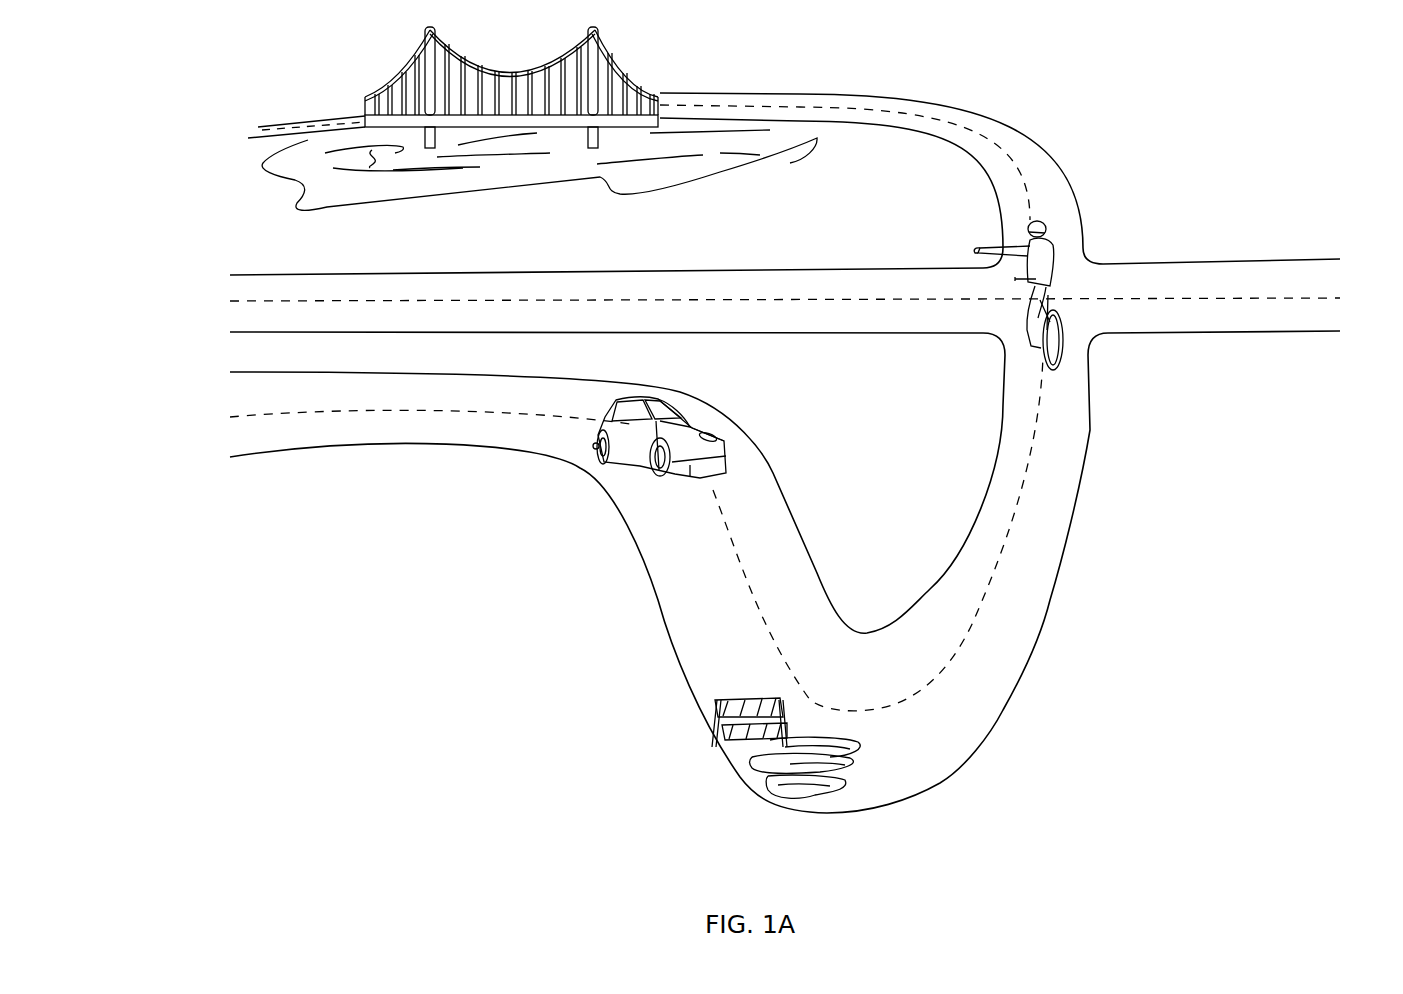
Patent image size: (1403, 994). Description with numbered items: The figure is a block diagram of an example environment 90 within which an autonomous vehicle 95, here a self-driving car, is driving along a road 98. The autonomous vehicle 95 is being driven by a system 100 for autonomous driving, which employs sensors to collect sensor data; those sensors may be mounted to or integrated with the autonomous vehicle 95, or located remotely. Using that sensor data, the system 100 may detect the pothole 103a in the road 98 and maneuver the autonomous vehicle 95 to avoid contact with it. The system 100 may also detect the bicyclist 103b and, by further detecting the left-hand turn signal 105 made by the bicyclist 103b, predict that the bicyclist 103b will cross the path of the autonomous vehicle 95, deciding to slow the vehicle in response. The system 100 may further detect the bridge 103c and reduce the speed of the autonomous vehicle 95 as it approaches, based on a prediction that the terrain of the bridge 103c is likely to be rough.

The environment 90 is at (1213, 75).
The autonomous vehicle 95 is at (697, 423).
The road 98 is at (1061, 552).
The system for autonomous driving 100 is at (583, 450).
The pothole 103a is at (780, 790).
The bicyclist 103b is at (1092, 242).
The bridge 103c is at (645, 45).
The left-hand turn signal 105 is at (990, 236).